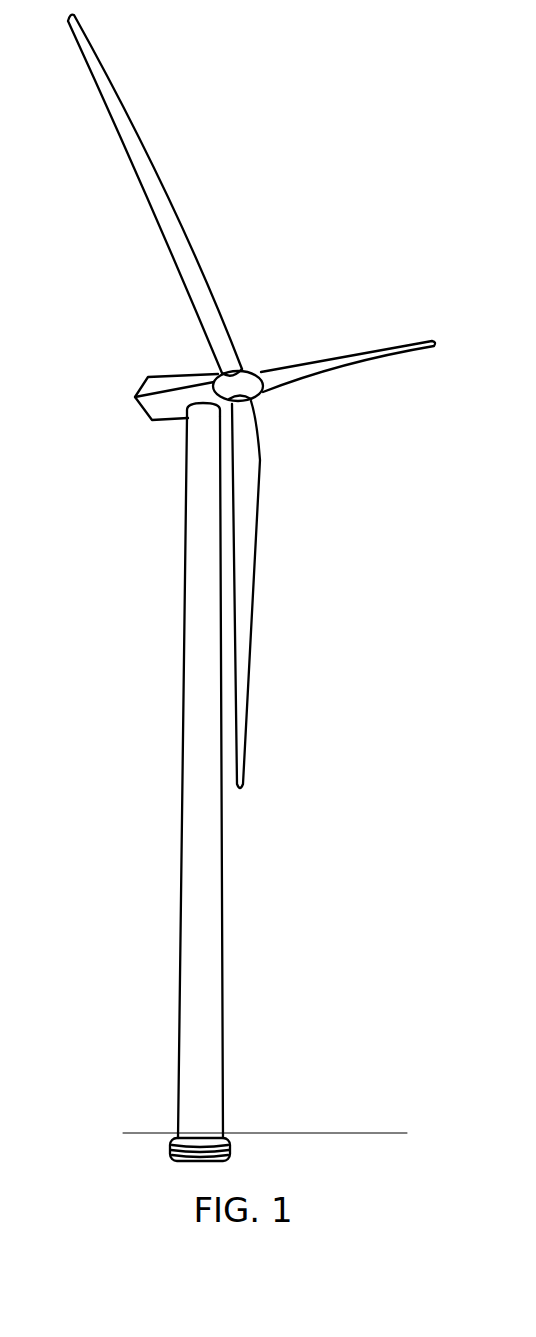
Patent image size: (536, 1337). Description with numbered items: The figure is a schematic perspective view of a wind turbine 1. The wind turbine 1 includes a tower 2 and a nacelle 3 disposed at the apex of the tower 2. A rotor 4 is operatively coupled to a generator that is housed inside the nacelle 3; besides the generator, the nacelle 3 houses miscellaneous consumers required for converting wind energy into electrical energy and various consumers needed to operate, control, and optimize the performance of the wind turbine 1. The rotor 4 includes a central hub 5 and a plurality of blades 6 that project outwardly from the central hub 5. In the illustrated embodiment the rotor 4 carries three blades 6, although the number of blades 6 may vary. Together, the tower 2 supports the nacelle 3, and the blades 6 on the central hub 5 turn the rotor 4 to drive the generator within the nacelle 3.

The wind turbine 1 is at (357, 200).
The tower 2 is at (202, 650).
The nacelle 3 is at (162, 382).
The rotor 4 is at (282, 405).
The central hub 5 is at (252, 378).
The blades 6 is at (124, 131).